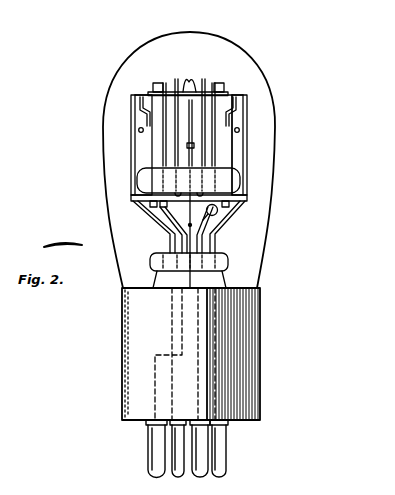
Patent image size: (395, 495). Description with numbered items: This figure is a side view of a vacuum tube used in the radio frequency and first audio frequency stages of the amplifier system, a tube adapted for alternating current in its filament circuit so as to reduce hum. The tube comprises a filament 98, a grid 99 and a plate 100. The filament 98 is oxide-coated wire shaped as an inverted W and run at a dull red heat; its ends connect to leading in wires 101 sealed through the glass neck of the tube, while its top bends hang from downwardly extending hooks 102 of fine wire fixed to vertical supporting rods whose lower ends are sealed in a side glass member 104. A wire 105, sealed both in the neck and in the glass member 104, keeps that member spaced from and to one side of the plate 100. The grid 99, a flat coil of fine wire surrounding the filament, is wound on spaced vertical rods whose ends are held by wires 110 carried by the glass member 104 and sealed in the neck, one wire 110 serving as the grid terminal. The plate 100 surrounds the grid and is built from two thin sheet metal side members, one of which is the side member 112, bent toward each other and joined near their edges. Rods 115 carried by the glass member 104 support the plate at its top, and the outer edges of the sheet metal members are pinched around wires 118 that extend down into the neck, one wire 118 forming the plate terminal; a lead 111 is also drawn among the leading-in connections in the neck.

The filament 98 is at (218, 216).
The grid 99 is at (207, 87).
The plate 100 is at (250, 126).
The leading in wires 101 is at (206, 236).
The hooks 102 is at (189, 82).
The glass member 104 is at (241, 181).
The wire 105 is at (206, 250).
The wires 110 is at (160, 108).
The lead-in wire 111 is at (155, 219).
The sheet metal side member 112 is at (240, 110).
The rods 115 is at (143, 152).
The wires 118 is at (133, 200).